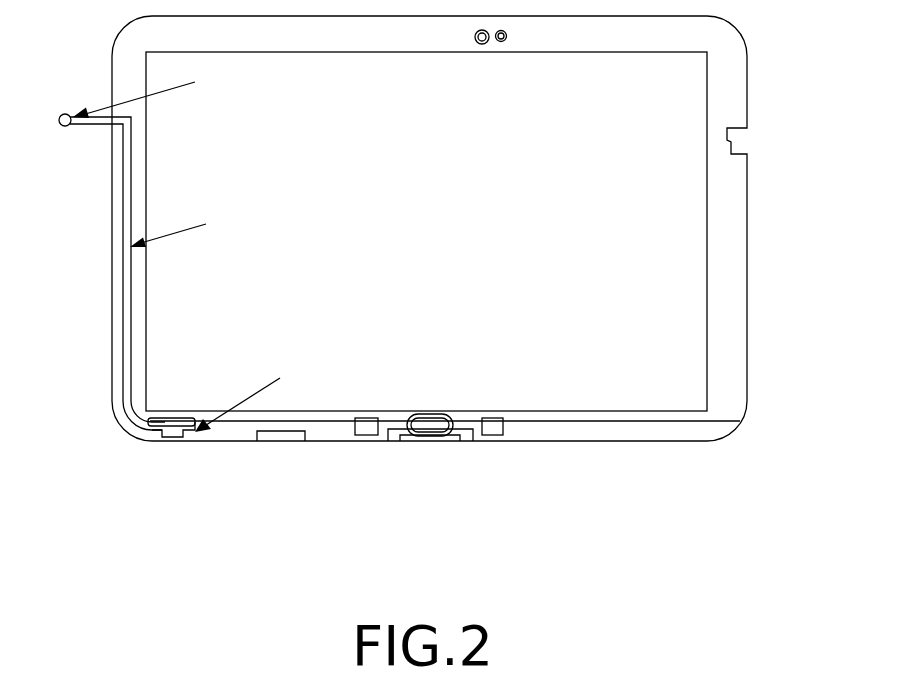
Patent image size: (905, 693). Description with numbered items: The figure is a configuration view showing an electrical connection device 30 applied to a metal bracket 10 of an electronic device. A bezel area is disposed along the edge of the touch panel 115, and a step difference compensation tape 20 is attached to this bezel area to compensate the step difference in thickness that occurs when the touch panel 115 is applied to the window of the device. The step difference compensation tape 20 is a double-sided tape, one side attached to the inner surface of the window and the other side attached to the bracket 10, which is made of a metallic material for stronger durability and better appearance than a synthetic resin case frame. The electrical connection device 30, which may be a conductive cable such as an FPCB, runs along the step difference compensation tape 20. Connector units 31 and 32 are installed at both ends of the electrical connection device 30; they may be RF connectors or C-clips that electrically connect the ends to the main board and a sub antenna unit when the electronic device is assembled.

The bracket 10 is at (582, 433).
The step difference compensation tape 20 is at (728, 348).
The touch panel 115 is at (677, 253).
The electrical connection device 30 is at (122, 388).
The connector unit 31 is at (183, 437).
The connector unit 32 is at (62, 125).